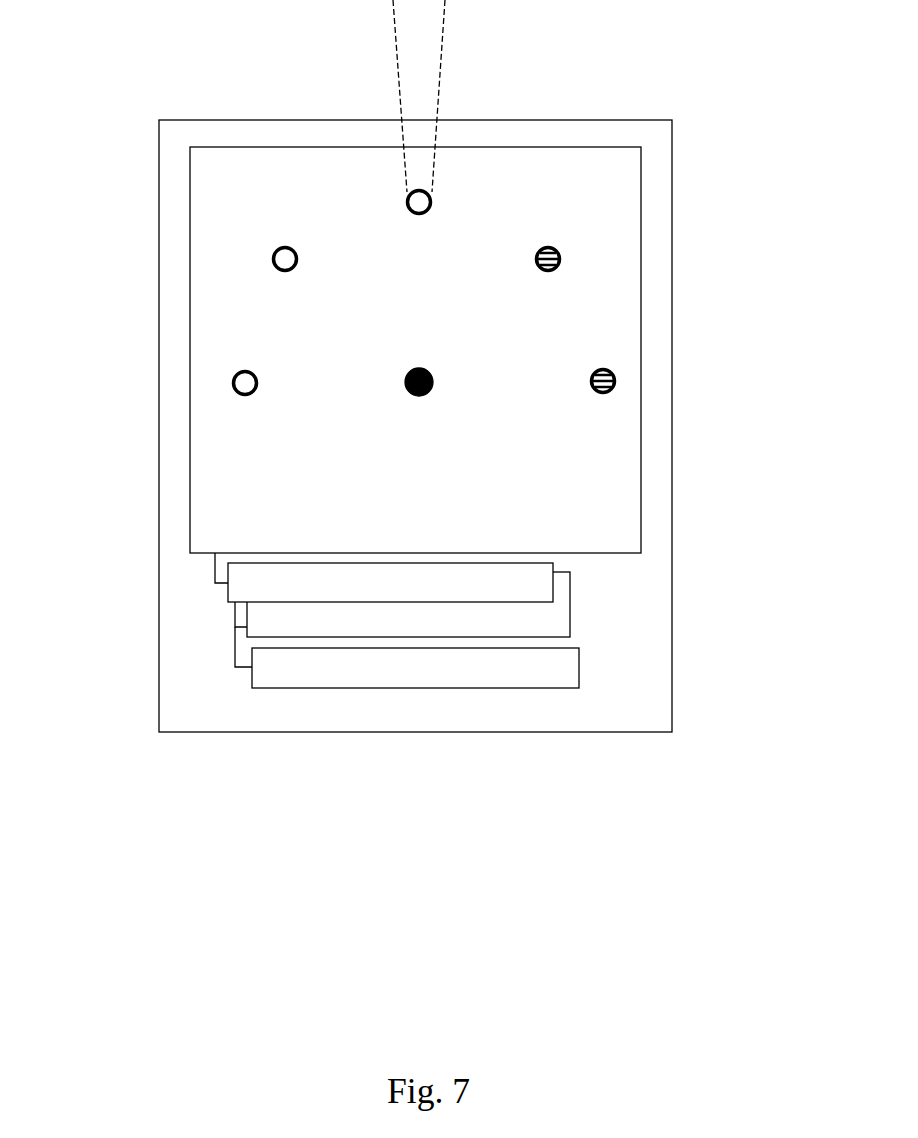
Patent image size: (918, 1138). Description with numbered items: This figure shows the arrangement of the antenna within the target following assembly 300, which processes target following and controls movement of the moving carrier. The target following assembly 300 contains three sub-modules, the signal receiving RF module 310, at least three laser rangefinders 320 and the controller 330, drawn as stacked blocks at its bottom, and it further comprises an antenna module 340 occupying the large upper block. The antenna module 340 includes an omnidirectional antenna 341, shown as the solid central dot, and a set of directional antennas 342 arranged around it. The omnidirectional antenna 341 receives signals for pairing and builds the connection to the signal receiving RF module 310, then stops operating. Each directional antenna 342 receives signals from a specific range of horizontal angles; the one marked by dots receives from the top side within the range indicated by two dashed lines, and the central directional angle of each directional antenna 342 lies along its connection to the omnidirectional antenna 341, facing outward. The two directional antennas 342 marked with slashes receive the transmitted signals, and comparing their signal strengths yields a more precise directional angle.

The target following assembly 300 is at (415, 426).
The signal receiving RF module 310 is at (384, 577).
The at least 3 laser rangefinders 320 is at (402, 604).
The controller 330 is at (407, 657).
The antenna module 340 is at (415, 350).
The omnidirectional antenna 341 is at (433, 385).
The directional antennas 342 is at (406, 203).